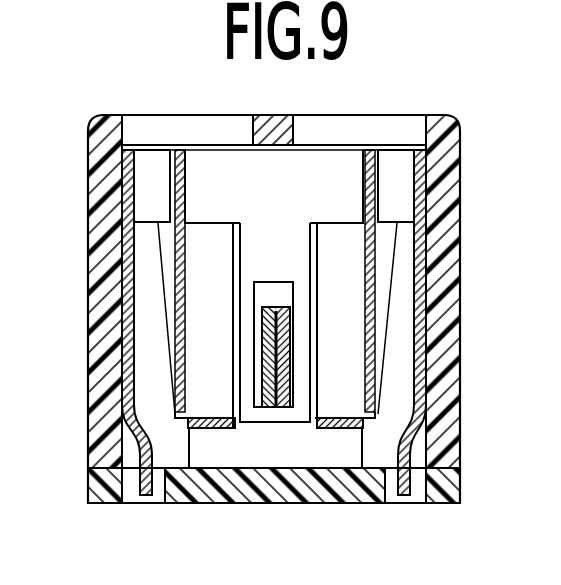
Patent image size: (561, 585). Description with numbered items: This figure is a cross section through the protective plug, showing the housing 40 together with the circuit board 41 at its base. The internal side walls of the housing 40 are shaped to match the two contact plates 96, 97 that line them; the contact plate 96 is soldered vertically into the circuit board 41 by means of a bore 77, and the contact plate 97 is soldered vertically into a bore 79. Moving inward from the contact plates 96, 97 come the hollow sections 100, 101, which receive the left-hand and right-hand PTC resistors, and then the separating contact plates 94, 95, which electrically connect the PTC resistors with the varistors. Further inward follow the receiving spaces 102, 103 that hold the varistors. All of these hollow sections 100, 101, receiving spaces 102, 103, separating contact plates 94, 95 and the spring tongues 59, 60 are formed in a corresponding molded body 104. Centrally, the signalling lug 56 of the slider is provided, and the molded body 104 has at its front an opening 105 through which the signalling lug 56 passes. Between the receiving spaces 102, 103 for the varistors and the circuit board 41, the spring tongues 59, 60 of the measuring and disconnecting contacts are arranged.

The housing 40 is at (437, 128).
The circuit board 41 is at (292, 490).
The signalling lug 56 is at (283, 333).
The spring tongue 59 is at (212, 428).
The spring tongue 60 is at (338, 428).
The bore 77 is at (395, 490).
The bore 79 is at (133, 488).
The separating contact plate 94 is at (377, 318).
The separating contact plate 95 is at (170, 308).
The contact plate 96 is at (430, 397).
The contact plate 97 is at (127, 398).
The hollow section 100 is at (400, 352).
The hollow section 101 is at (143, 350).
The receiving space 102 is at (403, 268).
The receiving space 103 is at (145, 268).
The molded body 104 is at (321, 170).
The opening 105 is at (268, 292).